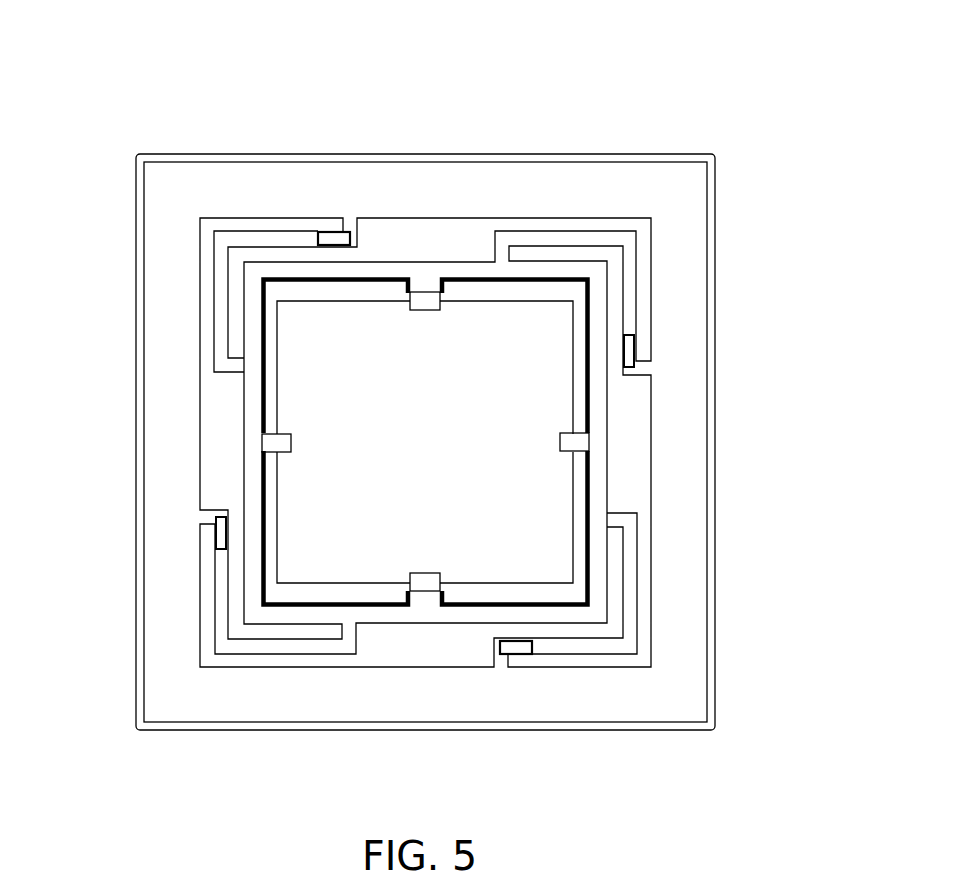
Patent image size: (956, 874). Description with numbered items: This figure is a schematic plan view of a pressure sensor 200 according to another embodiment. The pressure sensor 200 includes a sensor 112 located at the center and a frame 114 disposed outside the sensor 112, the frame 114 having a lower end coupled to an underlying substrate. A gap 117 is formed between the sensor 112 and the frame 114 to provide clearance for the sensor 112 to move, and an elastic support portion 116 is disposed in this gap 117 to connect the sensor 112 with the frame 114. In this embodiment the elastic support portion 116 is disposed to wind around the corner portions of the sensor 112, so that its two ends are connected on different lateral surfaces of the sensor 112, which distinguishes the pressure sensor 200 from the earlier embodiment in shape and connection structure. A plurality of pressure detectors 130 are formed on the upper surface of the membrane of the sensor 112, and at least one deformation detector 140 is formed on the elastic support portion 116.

The pressure sensor 200 is at (407, 48).
The sensor 112 is at (578, 482).
The frame 114 is at (390, 693).
The elastic support portion 116 is at (292, 647).
The gap 117 is at (413, 643).
The pressure detector 130 is at (582, 442).
The deformation detector 140 is at (220, 537).